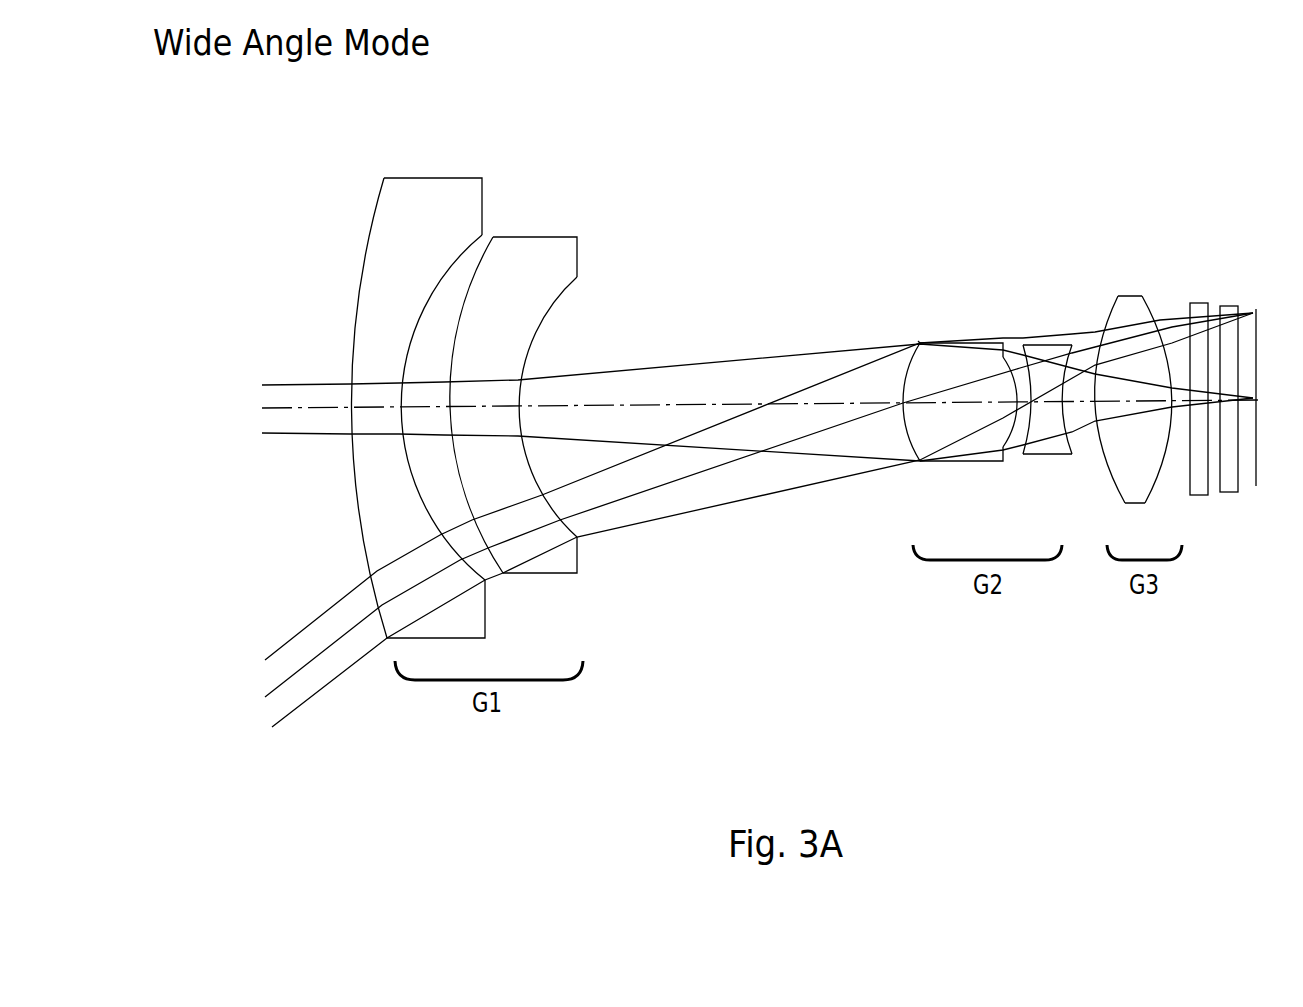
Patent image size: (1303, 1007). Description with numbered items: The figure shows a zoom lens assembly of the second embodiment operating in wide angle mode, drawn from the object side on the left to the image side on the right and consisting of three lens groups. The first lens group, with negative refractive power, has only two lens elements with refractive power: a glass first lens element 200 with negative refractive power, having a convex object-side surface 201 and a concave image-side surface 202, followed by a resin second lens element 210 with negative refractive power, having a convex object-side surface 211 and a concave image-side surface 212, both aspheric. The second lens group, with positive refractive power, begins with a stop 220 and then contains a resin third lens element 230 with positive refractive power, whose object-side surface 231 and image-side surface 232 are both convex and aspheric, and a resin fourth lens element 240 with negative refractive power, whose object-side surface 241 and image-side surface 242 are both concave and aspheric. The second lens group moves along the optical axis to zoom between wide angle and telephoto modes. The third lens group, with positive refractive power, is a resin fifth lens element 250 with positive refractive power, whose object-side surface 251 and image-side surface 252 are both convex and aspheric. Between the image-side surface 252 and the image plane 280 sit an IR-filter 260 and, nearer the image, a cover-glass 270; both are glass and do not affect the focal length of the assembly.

The first lens element 200 is at (367, 388).
The object-side surface of the first lens element 201 is at (352, 450).
The image-side surface of the first lens element 202 is at (398, 450).
The second lens element 210 is at (551, 388).
The object-side surface of the second lens element 211 is at (456, 452).
The image-side surface of the second lens element 212 is at (533, 450).
The stop 220 is at (916, 340).
The third lens element 230 is at (932, 391).
The object-side surface of the third lens element 231 is at (900, 425).
The image-side surface of the third lens element 232 is at (1006, 418).
The fourth lens element 240 is at (1028, 402).
The object-side surface of the fourth lens element 241 is at (1032, 430).
The image-side surface of the fourth lens element 242 is at (1060, 424).
The fifth lens element 250 is at (1154, 383).
The object-side surface of the fifth lens element 251 is at (1096, 420).
The image-side surface of the fifth lens element 252 is at (1170, 430).
The IR-filter 260 is at (1198, 347).
The cover-glass 270 is at (1233, 347).
The image plane 280 is at (1253, 312).